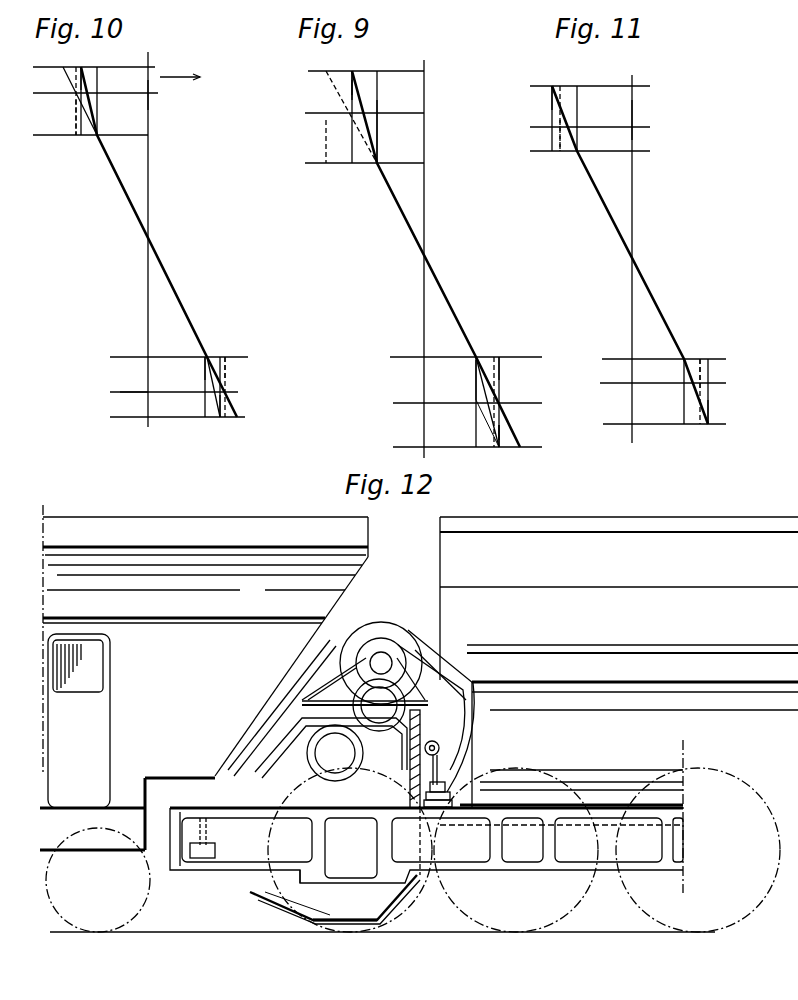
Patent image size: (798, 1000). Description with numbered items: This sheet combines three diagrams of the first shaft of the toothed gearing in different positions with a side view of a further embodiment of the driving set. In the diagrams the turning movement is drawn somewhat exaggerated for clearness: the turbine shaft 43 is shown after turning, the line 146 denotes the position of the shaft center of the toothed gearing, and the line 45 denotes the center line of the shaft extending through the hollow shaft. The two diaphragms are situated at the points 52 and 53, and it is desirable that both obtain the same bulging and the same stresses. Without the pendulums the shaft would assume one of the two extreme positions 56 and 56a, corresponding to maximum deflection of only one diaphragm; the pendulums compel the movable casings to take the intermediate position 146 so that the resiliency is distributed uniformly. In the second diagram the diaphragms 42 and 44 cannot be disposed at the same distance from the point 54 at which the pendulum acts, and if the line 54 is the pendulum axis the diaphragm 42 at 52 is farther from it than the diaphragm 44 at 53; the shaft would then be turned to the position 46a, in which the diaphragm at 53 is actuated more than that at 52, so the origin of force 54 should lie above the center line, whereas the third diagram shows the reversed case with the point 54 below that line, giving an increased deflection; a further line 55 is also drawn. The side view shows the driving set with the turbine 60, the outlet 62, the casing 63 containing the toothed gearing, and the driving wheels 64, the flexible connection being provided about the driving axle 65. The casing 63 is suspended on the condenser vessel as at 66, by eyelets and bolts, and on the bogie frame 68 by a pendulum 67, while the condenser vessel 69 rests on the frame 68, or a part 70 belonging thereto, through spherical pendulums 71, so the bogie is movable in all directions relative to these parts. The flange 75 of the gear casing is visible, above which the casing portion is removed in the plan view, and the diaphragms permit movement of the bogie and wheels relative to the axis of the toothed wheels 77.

In FIG. 10, the diaphragm 42 is at (208, 357).
In FIG. 9, the turbine shaft 43 is at (405, 216).
In FIG. 10, the diaphragm 44 is at (222, 418).
In FIG. 9, the center line of the shaft extending through the hollow shaft 45 is at (362, 96).
In FIG. 10, the turned position of the shaft 46a is at (78, 136).
In FIG. 11, the turned position of the shaft 46a is at (560, 151).
In FIG. 10, the diaphragm point 52 is at (97, 137).
In FIG. 9, the diaphragm point 52 is at (380, 162).
In FIG. 11, the diaphragm point 52 is at (577, 153).
In FIG. 10, the diaphragm point 53 is at (82, 66).
In FIG. 9, the diaphragm point 53 is at (352, 70).
In FIG. 11, the diaphragm point 53 is at (554, 86).
In FIG. 10, the point of pendulum action 54 is at (135, 93).
In FIG. 11, the point of pendulum action 54 is at (634, 127).
In FIG. 9, the line 55 is at (500, 357).
In FIG. 9, the extreme position 56 is at (378, 100).
In FIG. 9, the extreme position 56a is at (326, 142).
In FIG. 9, the shaft center line of the toothed gearing 146 is at (352, 89).
In FIG. 12, the turbine 60 is at (386, 624).
In FIG. 12, the outlet 62 is at (436, 719).
In FIG. 12, the gear casing 63 is at (258, 801).
In FIG. 12, the driving wheels 64 is at (407, 912).
In FIG. 12, the driving axle 65 is at (295, 905).
In FIG. 12, the suspension point with eyelets and bolts 66 is at (446, 762).
In FIG. 12, the pendulum 67 is at (204, 852).
In FIG. 12, the bogie frame 68 is at (186, 813).
In FIG. 12, the condenser vessel 69 is at (619, 662).
In FIG. 12, the part belonging to the bogie frame 70 is at (453, 802).
In FIG. 12, the spherical pendulums 71 is at (440, 786).
In FIG. 12, the flange 75 is at (258, 758).
In FIG. 12, the toothed wheels 77 is at (322, 928).